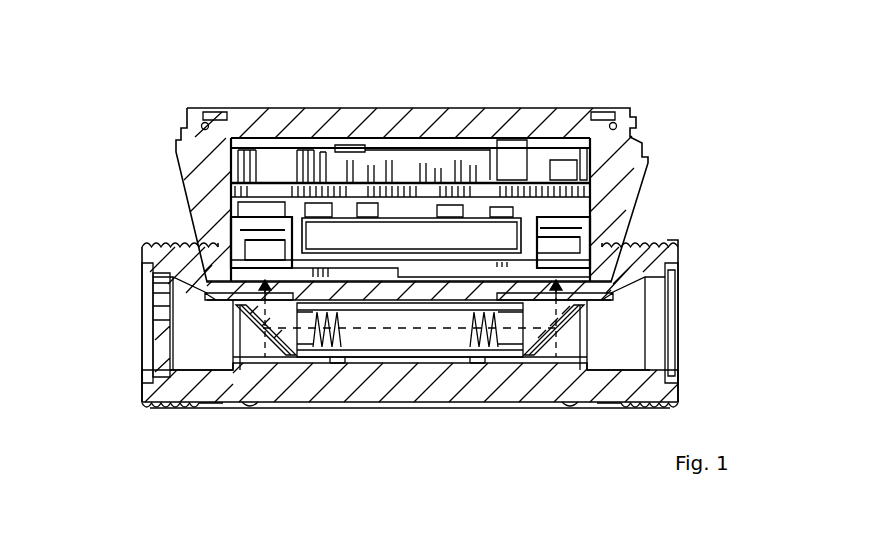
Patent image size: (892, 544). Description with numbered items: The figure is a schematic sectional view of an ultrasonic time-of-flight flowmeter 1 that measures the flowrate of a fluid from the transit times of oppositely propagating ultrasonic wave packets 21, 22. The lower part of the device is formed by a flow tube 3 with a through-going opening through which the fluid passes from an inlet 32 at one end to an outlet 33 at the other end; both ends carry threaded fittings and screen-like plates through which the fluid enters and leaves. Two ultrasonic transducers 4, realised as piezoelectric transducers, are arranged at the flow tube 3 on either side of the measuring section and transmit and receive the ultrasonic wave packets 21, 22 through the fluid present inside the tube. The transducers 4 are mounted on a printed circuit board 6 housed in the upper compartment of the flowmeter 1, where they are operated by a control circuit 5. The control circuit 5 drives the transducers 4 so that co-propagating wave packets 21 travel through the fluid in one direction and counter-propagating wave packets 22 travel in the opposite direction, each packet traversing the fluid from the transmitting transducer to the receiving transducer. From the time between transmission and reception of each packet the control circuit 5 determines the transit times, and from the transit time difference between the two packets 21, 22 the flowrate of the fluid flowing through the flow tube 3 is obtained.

The ultrasonic flowmeter 1 is at (638, 93).
The flow tube 3 is at (157, 250).
The ultrasonic transducers 4 is at (253, 278).
The control circuit 5 is at (467, 265).
The printed circuit board 6 is at (387, 263).
The co-propagating ultrasonic wave packets 21 is at (338, 340).
The counter-propagating ultrasonic wave packets 22 is at (497, 340).
The inlet 32 is at (148, 290).
The outlet 33 is at (672, 278).